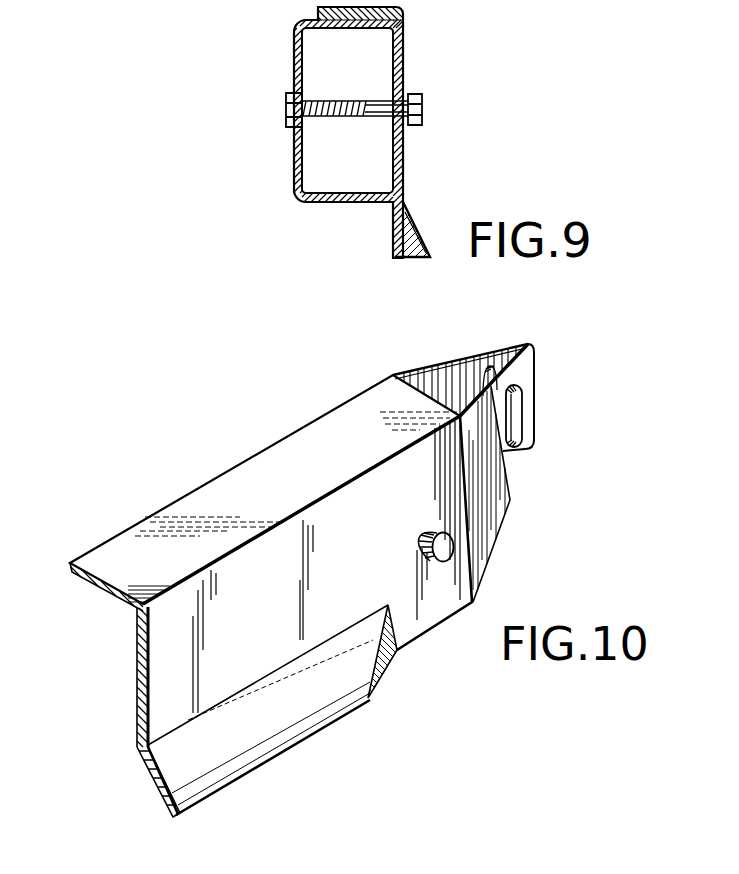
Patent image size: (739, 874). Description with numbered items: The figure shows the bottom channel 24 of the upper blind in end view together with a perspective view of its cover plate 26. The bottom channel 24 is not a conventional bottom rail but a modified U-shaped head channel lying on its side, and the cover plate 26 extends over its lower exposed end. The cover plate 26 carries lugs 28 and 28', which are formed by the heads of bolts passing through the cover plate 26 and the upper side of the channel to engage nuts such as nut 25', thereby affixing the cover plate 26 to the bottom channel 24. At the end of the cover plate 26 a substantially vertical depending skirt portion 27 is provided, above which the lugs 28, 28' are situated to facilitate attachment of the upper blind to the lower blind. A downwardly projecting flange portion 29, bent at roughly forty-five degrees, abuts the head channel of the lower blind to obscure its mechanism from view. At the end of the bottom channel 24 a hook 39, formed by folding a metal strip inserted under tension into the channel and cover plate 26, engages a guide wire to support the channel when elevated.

In FIG. 9, the bottom channel 24 is at (295, 163).
In FIG. 9, the nut 25' is at (319, 116).
In FIG. 9, the cover plate 26 is at (403, 43).
In FIG. 10, the cover plate 26 is at (173, 660).
In FIG. 10, the skirt portion 27 is at (415, 620).
In FIG. 10, the lug 28 is at (476, 570).
In FIG. 9, the lug 28' is at (440, 118).
In FIG. 9, the flange portion 29 is at (415, 221).
In FIG. 10, the flange portion 29 is at (245, 758).
In FIG. 10, the hook 39 is at (536, 401).